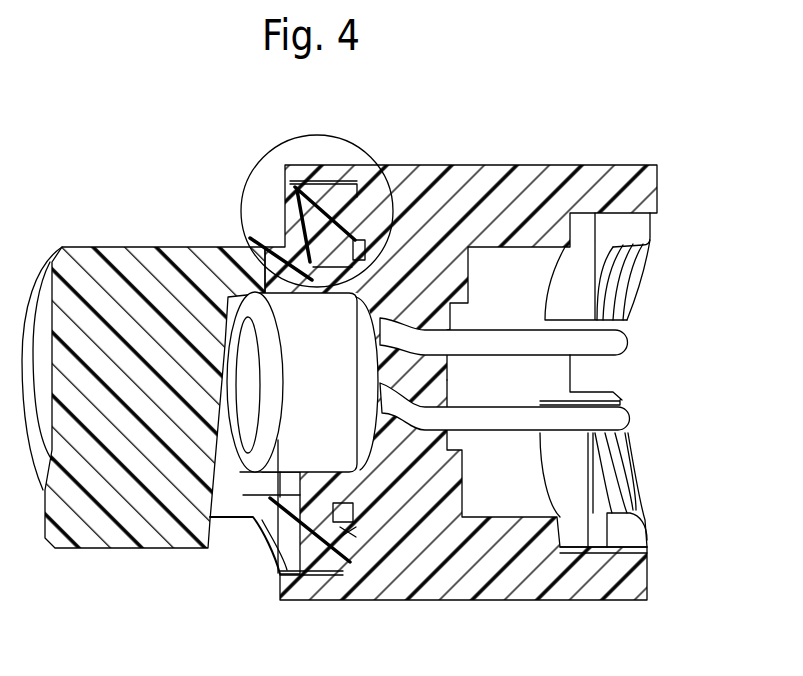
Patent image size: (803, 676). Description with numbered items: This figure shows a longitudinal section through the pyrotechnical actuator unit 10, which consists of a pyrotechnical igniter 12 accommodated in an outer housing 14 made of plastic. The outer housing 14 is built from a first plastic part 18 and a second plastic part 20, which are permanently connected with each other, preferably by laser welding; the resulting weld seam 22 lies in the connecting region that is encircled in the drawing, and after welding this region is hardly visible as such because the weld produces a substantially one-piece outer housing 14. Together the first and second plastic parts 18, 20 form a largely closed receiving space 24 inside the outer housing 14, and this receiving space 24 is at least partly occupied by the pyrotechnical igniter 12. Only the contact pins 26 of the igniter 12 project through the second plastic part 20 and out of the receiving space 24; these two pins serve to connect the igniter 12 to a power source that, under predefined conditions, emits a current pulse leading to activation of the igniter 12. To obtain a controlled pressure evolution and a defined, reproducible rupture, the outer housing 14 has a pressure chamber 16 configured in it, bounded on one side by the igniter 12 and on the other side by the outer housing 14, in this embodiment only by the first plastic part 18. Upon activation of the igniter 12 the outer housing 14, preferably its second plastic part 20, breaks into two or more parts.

The pyrotechnical actuator unit 10 is at (606, 140).
The pyrotechnical igniter 12 is at (278, 572).
The outer housing 14 is at (480, 570).
The pressure chamber 16 is at (215, 520).
The first plastic part 18 is at (137, 272).
The second plastic part 20 is at (486, 183).
The weld seam 22 is at (266, 210).
The receiving space 24 is at (328, 490).
The contact pins 26 is at (612, 341).